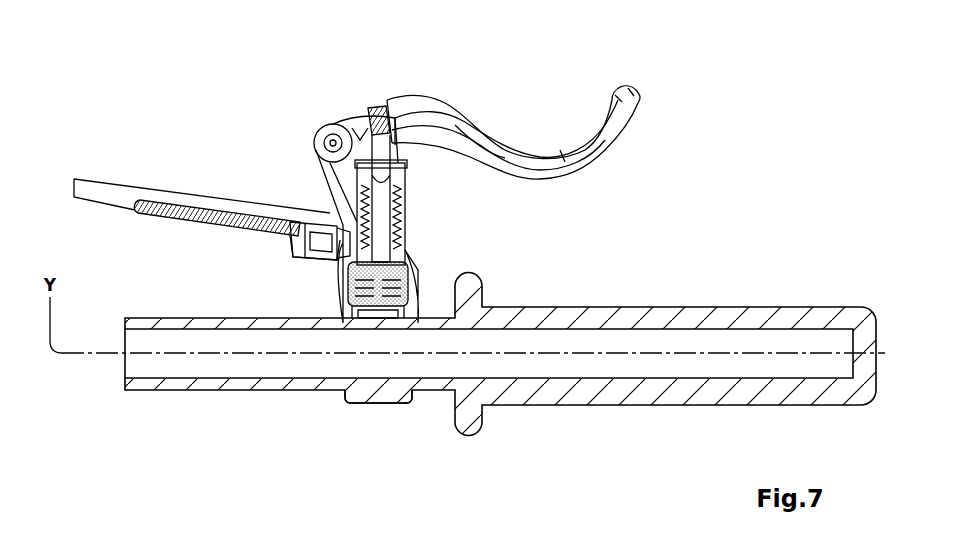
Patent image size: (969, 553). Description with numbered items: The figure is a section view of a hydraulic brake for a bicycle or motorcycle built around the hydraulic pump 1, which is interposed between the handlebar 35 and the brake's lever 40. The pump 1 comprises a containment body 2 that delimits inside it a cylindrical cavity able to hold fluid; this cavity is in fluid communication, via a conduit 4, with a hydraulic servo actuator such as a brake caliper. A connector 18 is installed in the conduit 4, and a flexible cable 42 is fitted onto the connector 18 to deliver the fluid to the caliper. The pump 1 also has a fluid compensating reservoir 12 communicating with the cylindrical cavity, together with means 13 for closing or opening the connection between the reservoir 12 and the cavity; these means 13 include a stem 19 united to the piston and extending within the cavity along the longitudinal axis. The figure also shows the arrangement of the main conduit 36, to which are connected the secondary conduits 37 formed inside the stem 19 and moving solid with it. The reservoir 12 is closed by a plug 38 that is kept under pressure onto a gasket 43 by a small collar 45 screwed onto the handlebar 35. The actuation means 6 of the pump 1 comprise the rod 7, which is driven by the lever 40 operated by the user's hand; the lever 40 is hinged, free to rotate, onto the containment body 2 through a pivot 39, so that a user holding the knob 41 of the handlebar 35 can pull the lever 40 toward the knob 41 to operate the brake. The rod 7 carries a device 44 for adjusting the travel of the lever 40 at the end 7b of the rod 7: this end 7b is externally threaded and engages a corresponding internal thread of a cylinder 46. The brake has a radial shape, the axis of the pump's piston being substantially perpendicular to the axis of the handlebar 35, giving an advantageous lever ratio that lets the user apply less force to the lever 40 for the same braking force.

The pump 1 is at (170, 86).
The containment body 2 is at (322, 185).
The conduit 4 is at (345, 223).
The actuation means 6 is at (446, 88).
The rod 7 is at (485, 130).
The end of rod 7b is at (374, 108).
The fluid compensating reservoir 12 is at (343, 288).
The means for closing or opening the connection 13 is at (408, 240).
The connector 18 is at (288, 250).
The stem 19 is at (408, 193).
The handlebar 35 is at (207, 390).
The main conduit 36 is at (335, 218).
The secondary conduits 37 is at (412, 258).
The plug 38 is at (352, 280).
The pivot 39 is at (322, 128).
The lever 40 is at (615, 86).
The knob 41 is at (682, 398).
The flexible cable 42 is at (118, 196).
The gasket 43 is at (345, 312).
The adjusting device 44 is at (355, 102).
The small collar 45 is at (377, 398).
The cylinder 46 is at (400, 112).